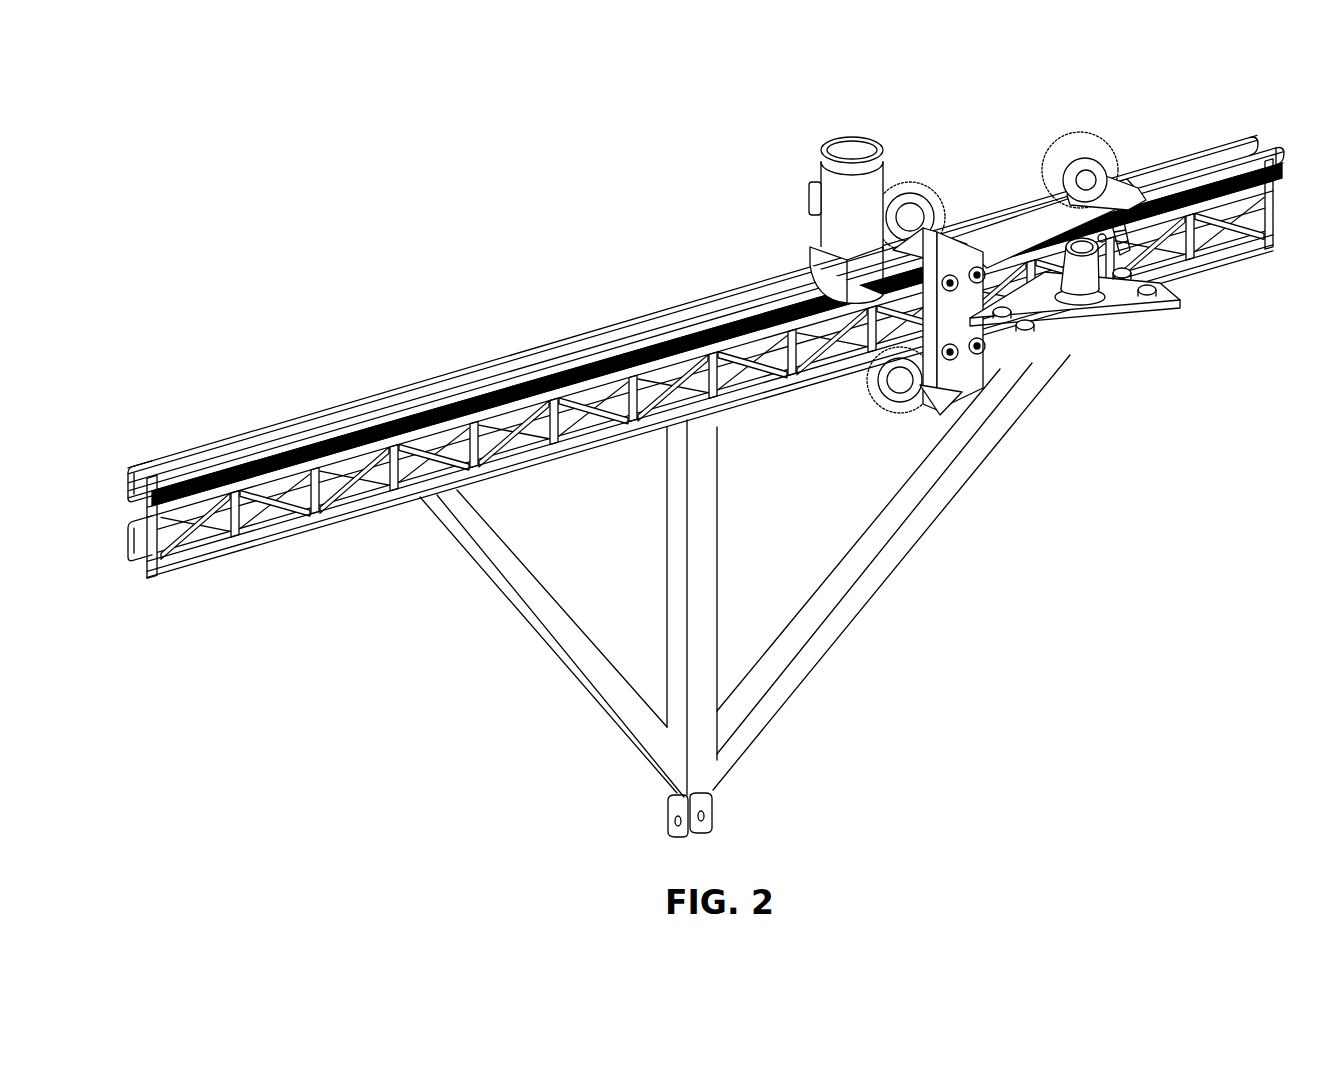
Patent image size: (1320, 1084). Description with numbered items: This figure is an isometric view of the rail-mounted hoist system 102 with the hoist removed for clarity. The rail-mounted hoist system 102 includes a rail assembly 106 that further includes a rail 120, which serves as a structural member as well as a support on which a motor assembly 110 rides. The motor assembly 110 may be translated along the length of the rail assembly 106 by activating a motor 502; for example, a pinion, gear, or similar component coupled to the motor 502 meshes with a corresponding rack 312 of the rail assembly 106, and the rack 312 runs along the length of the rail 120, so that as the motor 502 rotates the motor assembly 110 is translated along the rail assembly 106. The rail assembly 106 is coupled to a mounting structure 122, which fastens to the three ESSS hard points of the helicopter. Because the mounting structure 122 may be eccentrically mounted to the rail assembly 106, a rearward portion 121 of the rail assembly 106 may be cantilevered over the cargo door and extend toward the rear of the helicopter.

The rail-mounted hoist system 102 is at (312, 266).
The rail assembly 106 is at (234, 403).
The motor assembly 110 is at (784, 199).
The rail 120 is at (523, 363).
The rearward portion 121 is at (178, 447).
The mounting structure 122 is at (596, 767).
The rack 312 is at (357, 481).
The motor 502 is at (868, 196).